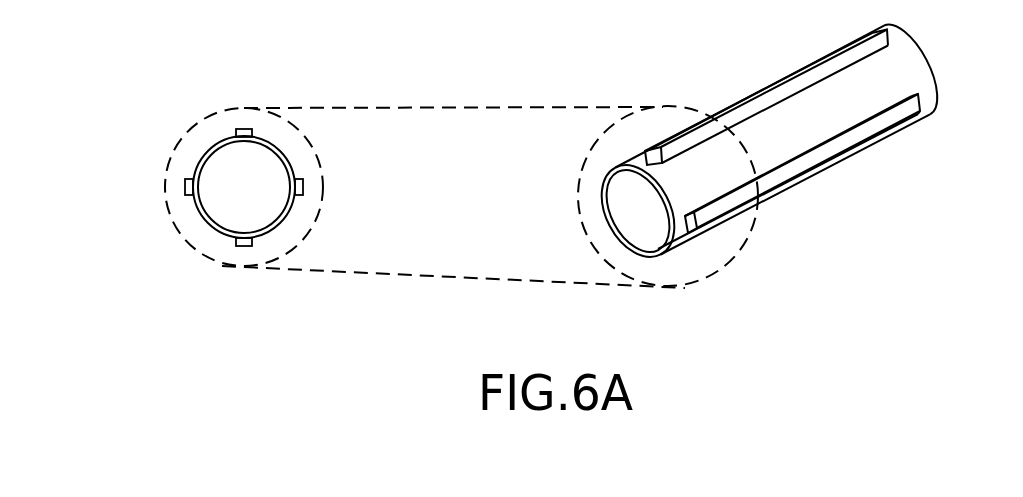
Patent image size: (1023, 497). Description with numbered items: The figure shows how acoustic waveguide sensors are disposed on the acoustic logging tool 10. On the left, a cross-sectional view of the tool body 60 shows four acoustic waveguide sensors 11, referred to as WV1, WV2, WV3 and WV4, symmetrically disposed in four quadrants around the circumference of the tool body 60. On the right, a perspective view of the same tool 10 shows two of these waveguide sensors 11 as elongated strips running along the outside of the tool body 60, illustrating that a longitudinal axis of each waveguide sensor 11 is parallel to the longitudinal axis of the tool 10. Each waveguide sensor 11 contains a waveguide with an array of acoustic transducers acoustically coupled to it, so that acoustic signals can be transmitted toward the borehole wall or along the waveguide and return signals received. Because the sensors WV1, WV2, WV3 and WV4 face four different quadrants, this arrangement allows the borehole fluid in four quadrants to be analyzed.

The acoustic tool 10 is at (290, 252).
The tool body 60 is at (292, 214).
The acoustic waveguide sensor 11 is at (300, 177).
The first acoustic waveguide sensor WV1 is at (240, 129).
The second acoustic waveguide sensor WV2 is at (312, 188).
The third acoustic waveguide sensor WV3 is at (240, 254).
The fourth acoustic waveguide sensor WV4 is at (176, 198).